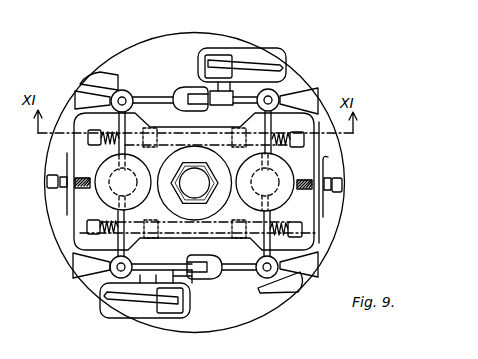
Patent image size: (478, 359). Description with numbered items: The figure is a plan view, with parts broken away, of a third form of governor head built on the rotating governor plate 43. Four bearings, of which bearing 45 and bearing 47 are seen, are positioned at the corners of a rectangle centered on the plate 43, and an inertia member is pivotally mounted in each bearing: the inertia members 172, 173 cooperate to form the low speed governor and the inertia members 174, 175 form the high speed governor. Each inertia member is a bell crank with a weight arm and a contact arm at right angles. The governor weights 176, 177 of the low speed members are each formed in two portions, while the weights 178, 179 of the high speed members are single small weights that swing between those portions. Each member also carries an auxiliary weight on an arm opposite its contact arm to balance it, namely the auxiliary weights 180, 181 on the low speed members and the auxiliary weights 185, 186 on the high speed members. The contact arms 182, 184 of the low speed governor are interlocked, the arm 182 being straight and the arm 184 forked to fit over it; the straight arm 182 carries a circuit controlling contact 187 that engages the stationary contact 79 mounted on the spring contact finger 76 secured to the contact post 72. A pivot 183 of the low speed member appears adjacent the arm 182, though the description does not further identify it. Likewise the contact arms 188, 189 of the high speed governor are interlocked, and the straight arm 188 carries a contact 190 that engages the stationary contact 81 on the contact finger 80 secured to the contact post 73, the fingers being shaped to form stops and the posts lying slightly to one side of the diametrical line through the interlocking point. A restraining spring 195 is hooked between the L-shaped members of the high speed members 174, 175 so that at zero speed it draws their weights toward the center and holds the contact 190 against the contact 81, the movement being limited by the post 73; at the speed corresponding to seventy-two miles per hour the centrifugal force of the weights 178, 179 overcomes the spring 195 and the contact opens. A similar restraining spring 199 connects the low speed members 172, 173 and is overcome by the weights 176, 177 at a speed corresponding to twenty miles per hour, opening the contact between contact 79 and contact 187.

The governor plate 43 is at (343, 157).
The bearing 45 is at (297, 298).
The bearing 47 is at (107, 76).
The contact post 72 is at (155, 298).
The contact post 73 is at (228, 68).
The contact finger 76 is at (132, 288).
The stationary contact 79 is at (193, 283).
The contact finger 80 is at (266, 66).
The stationary contact 81 is at (248, 62).
The inertia member 172 is at (80, 242).
The inertia member 173 is at (280, 250).
The inertia member 174 is at (118, 130).
The inertia member 175 is at (276, 120).
The governor weight 176 is at (75, 186).
The governor weight 177 is at (302, 231).
The governor weight 178 is at (108, 172).
The governor weight 179 is at (277, 190).
The auxiliary weight 180 is at (72, 256).
The auxiliary weight 181 is at (315, 263).
The contact arm 182 is at (186, 260).
The pivot 183 is at (112, 270).
The contact arm 184 is at (239, 278).
The auxiliary weight 185 is at (90, 88).
The auxiliary weight 186 is at (305, 97).
The circuit controlling contact 187 is at (160, 252).
The contact arm 188 is at (226, 104).
The contact arm 189 is at (152, 96).
The contact 190 is at (191, 107).
The restraining spring 195 is at (112, 146).
The restraining spring 199 is at (108, 206).